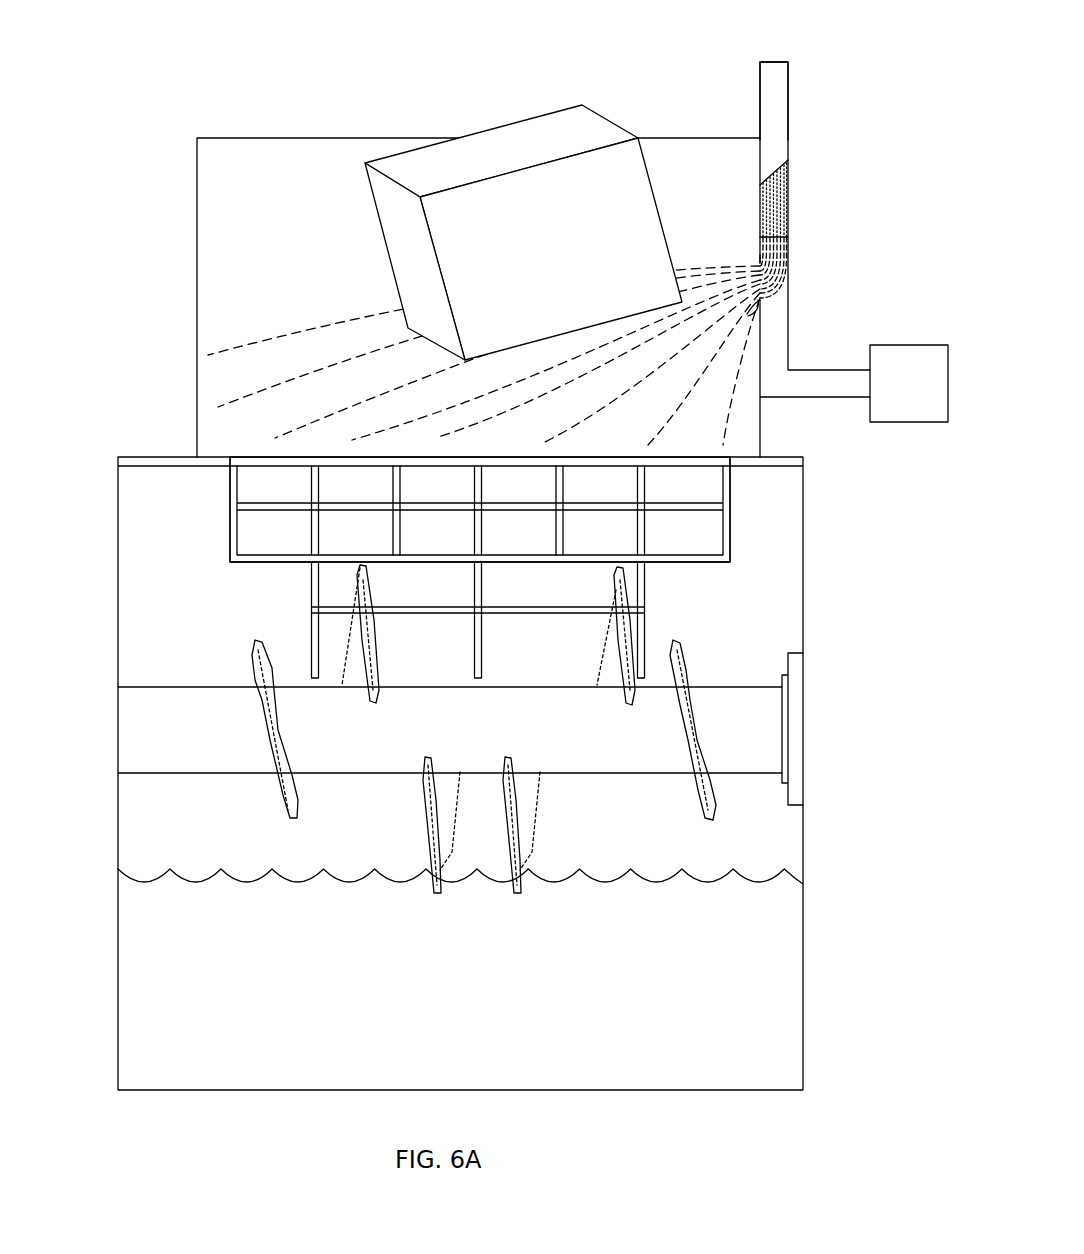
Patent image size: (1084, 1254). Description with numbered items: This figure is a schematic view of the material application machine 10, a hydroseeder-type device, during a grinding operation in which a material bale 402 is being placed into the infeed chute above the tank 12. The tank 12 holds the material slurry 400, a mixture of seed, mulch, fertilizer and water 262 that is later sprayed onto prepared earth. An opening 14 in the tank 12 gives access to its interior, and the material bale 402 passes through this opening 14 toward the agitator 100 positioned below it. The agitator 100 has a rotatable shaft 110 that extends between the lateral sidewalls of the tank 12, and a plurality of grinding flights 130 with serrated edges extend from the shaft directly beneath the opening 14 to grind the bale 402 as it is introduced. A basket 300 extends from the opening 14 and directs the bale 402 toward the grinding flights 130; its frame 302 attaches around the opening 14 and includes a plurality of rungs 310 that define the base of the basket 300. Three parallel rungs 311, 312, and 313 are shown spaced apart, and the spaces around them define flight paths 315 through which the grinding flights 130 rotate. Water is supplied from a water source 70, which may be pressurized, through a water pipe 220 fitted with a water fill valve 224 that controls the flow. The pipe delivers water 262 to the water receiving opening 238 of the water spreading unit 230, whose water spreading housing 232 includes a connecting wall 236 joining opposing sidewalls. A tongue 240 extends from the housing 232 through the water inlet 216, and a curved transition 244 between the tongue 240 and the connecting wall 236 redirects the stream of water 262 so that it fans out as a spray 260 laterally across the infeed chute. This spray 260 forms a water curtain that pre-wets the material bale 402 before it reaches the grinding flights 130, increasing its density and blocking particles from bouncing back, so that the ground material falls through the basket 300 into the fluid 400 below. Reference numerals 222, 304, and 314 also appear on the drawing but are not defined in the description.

The material application machine 10 is at (128, 75).
The tank 12 is at (803, 615).
The opening 14 is at (667, 190).
The water source 70 is at (925, 399).
The agitator 100 is at (108, 503).
The rotatable shaft 110 is at (182, 687).
The grinding flights 130 is at (263, 798).
The water inlet 216 is at (755, 262).
The water pipe 220 is at (796, 228).
The nozzle body 222 is at (782, 62).
The water fill valve 224 is at (785, 178).
The water spreading unit 230 is at (838, 236).
The water spreading housing 232 is at (810, 275).
The connecting wall 236 is at (790, 246).
The water receiving opening 238 is at (790, 225).
The tongue 240 is at (750, 314).
The transition 244 is at (790, 294).
The spray 260 is at (250, 268).
The water 262 is at (790, 198).
The basket 300 is at (494, 494).
The frame 302 is at (755, 493).
The rack left section 304 is at (230, 530).
The rungs 310 is at (708, 655).
The rung 311 is at (647, 622).
The rung 312 is at (482, 637).
The rung 313 is at (311, 627).
The support rod 314 is at (440, 613).
The flight paths 315 is at (389, 629).
The material slurry 400 is at (582, 1009).
The material bale 402 is at (607, 125).